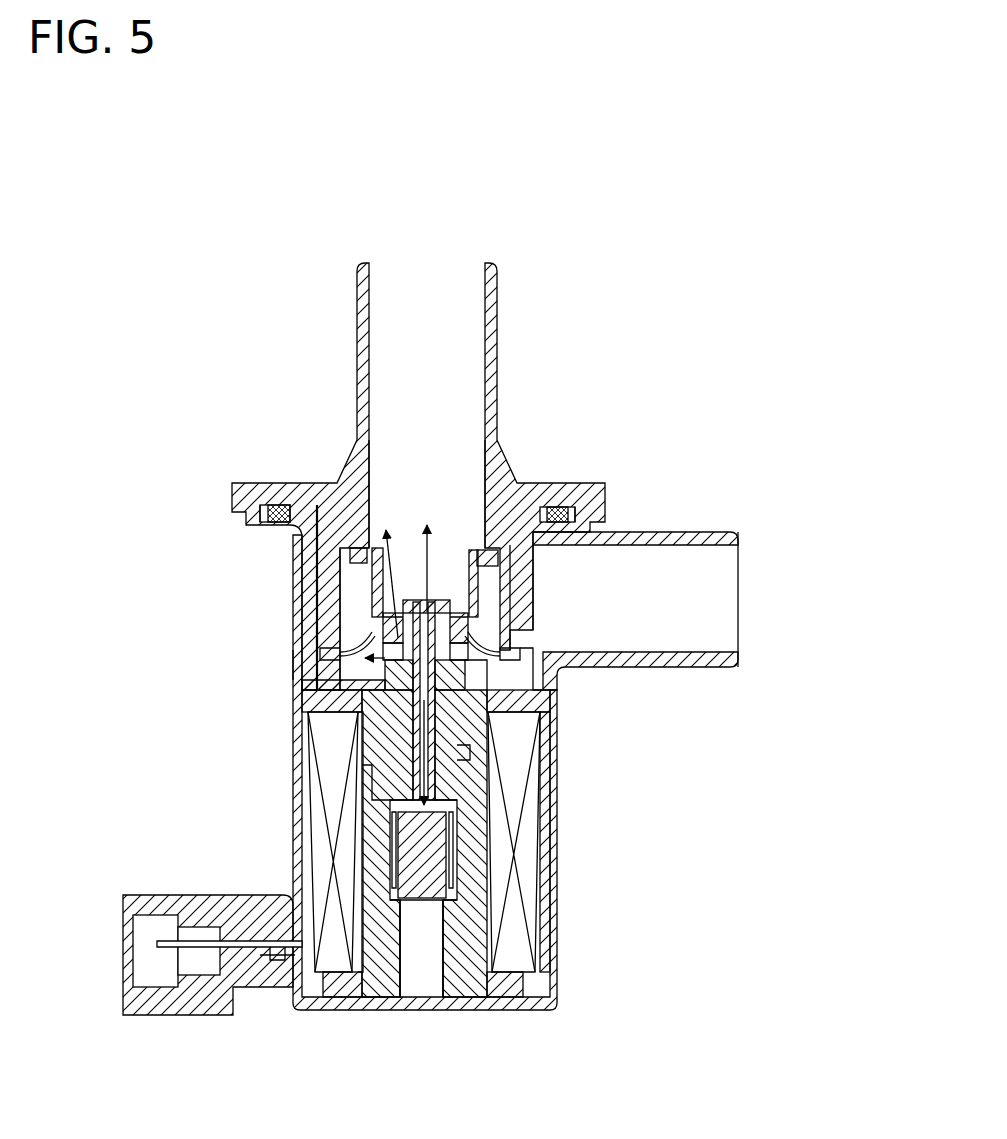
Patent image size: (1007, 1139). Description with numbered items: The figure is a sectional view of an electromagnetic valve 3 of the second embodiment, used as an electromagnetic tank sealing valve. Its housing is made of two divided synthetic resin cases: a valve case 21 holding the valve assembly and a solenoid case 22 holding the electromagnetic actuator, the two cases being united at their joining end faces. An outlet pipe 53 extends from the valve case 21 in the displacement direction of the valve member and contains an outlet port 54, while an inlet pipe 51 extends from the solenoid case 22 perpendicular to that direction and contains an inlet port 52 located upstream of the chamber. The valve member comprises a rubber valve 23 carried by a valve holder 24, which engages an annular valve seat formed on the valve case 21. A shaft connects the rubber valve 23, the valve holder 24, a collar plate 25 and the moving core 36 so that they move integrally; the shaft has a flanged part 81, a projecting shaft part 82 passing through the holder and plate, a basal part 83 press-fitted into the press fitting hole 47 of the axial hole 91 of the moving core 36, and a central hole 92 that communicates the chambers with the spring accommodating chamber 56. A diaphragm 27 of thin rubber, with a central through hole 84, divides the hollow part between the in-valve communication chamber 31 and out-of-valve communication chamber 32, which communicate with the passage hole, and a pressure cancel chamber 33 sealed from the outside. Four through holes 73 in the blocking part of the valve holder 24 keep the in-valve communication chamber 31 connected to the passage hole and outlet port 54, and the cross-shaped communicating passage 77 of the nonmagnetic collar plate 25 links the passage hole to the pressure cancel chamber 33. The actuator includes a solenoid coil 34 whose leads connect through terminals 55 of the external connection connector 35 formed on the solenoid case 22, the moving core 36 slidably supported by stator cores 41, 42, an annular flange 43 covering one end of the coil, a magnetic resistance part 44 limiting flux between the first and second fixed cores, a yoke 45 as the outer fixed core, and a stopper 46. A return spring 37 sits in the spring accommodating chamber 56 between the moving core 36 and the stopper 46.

The electromagnetic valve 3 is at (286, 292).
The valve case 21 is at (530, 488).
The solenoid case 22 is at (560, 862).
The rubber valve 23 is at (352, 552).
The valve holder 24 is at (372, 600).
The collar plate 25 is at (370, 640).
The diaphragm 27 is at (487, 636).
The in-valve communication chamber 31 is at (438, 560).
The out-of-valve communication chamber 32 is at (340, 592).
The pressure cancel chamber 33 is at (305, 702).
The solenoid coil 34 is at (470, 900).
The external connection connector 35 is at (223, 1000).
The moving core 36 is at (315, 695).
The return spring 37 is at (475, 930).
The stator core 41 is at (372, 870).
The stator core 42 is at (300, 740).
The annular flange 43 is at (360, 718).
The magnetic resistance part 44 is at (372, 770).
The yoke 45 is at (340, 992).
The stopper 46 is at (430, 990).
The press fitting hole 47 is at (470, 770).
The inlet pipe 51 is at (702, 538).
The inlet port 52 is at (730, 567).
The outlet pipe 53 is at (492, 320).
The outlet port 54 is at (407, 295).
The terminal 55 is at (185, 990).
The spring accommodating chamber 56 is at (455, 830).
The through holes 73 is at (533, 590).
The communicating passage 77 is at (330, 650).
The flanged part 81 is at (444, 600).
The projecting shaft part 82 is at (540, 662).
The basal part 83 is at (462, 748).
The through hole 84 is at (472, 628).
The axial hole 91 is at (457, 800).
The central hole 92 is at (527, 700).